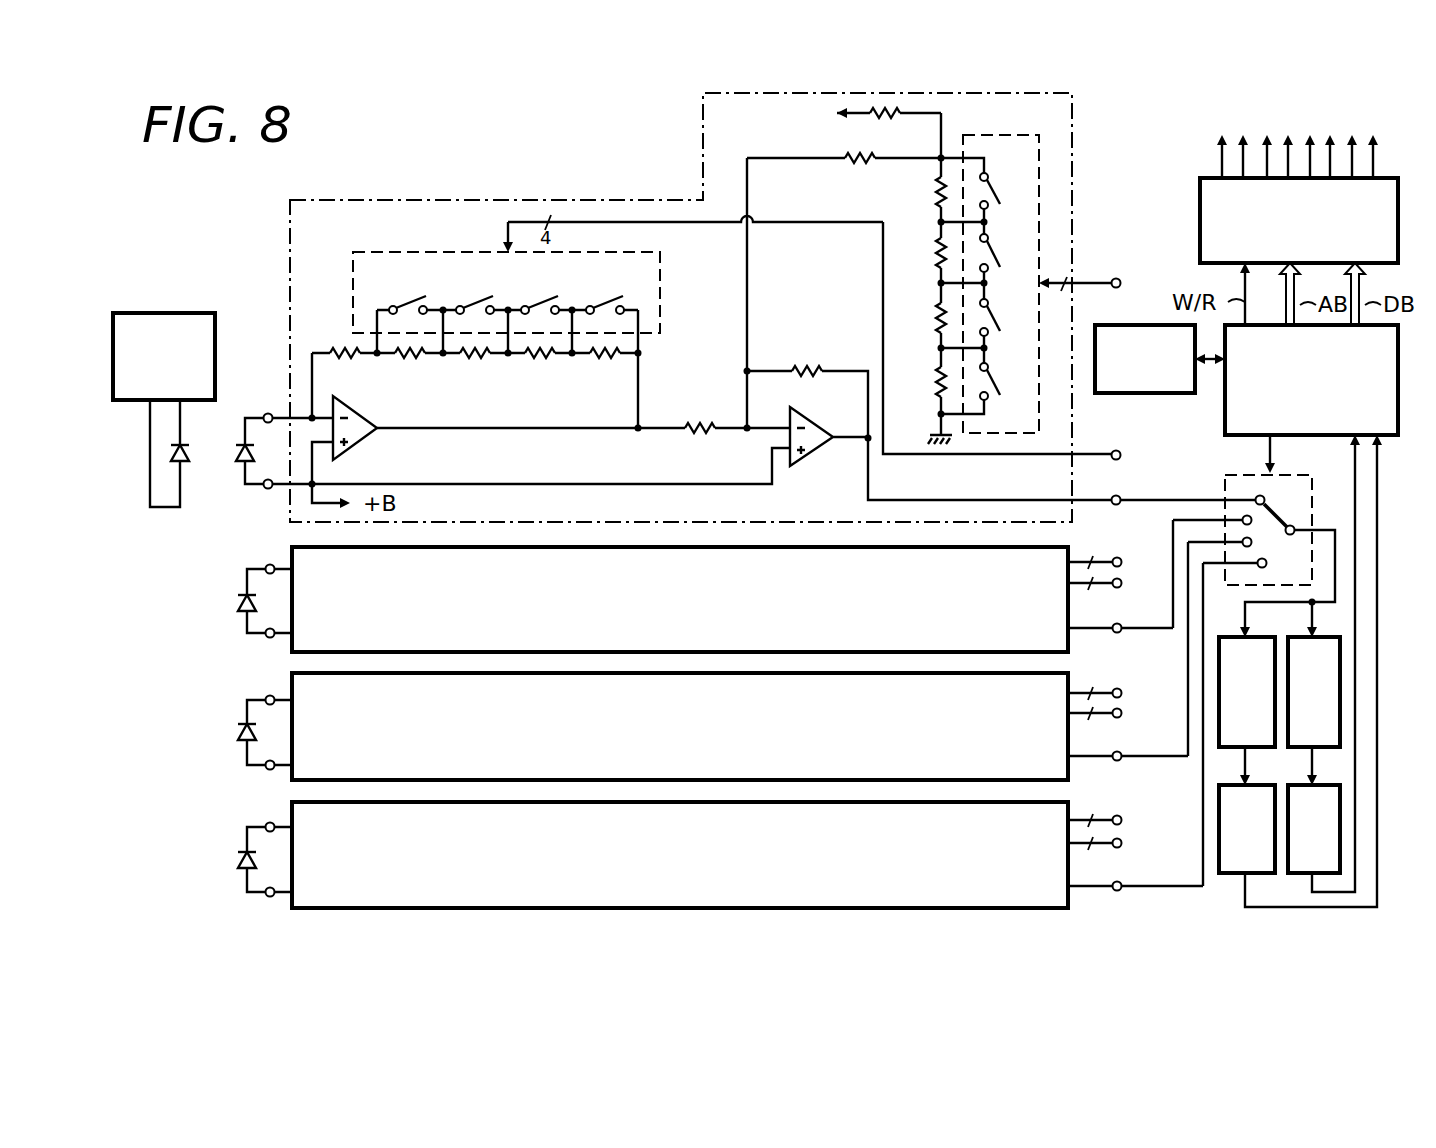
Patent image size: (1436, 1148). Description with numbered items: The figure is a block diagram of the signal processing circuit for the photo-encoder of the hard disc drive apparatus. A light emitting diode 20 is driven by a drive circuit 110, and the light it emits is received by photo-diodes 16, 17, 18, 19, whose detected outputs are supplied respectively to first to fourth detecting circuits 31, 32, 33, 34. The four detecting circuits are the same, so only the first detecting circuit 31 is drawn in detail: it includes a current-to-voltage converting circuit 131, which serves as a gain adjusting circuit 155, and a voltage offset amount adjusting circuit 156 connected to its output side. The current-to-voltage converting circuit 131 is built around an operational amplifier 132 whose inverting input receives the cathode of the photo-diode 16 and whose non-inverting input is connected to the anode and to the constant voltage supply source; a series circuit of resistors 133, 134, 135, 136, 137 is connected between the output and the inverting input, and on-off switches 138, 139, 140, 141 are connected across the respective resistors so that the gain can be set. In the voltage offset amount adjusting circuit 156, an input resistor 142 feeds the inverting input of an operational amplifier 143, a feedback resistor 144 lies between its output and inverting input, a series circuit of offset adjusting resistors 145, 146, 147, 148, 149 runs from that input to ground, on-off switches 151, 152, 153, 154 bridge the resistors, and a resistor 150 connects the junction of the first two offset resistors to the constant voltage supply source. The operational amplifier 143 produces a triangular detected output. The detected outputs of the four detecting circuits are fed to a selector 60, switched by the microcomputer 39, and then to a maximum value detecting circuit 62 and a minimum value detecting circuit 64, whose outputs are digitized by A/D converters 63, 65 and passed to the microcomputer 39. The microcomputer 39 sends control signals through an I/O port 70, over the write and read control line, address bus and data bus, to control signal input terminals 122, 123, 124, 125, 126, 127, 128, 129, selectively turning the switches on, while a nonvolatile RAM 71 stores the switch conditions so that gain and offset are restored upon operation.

The drive circuit 110 is at (175, 313).
The light emitting diode 20 is at (190, 460).
The photo-diode 16 is at (238, 442).
The photo-diode 17 is at (236, 607).
The photo-diode 18 is at (236, 738).
The photo-diode 19 is at (236, 868).
The first detecting circuit 31 is at (364, 188).
The second detecting circuit 32 is at (290, 558).
The third detecting circuit 33 is at (290, 687).
The fourth detecting circuit 34 is at (290, 815).
The current-to-voltage converting circuit 131 is at (486, 342).
The operational amplifier 132 is at (372, 444).
The resistor 133 is at (348, 360).
The resistor 134 is at (413, 360).
The resistor 135 is at (478, 360).
The resistor 136 is at (543, 360).
The resistor 137 is at (607, 360).
The on-off switch 138 is at (402, 303).
The on-off switch 139 is at (469, 303).
The on-off switch 140 is at (534, 303).
The on-off switch 141 is at (599, 303).
The input resistor 142 is at (700, 418).
The operational amplifier 143 is at (817, 426).
The feedback resistor 144 is at (803, 360).
The offset adjusting resistor 145 is at (860, 165).
The offset adjusting resistor 146 is at (926, 191).
The offset adjusting resistor 147 is at (932, 249).
The offset adjusting resistor 148 is at (930, 305).
The offset adjusting resistor 149 is at (925, 372).
The resistor 150 is at (878, 123).
The on-off switch 151 is at (998, 199).
The on-off switch 152 is at (998, 260).
The on-off switch 153 is at (998, 318).
The on-off switch 154 is at (998, 383).
The gain adjusting circuit 155 is at (489, 474).
The voltage offset amount adjusting circuit 156 is at (928, 300).
The control signal input terminal 122 is at (1116, 278).
The control signal input terminal 123 is at (1121, 456).
The control signal input terminal 124 is at (1121, 559).
The control signal input terminal 125 is at (1120, 586).
The control signal input terminal 126 is at (1121, 690).
The control signal input terminal 127 is at (1120, 716).
The control signal input terminal 128 is at (1121, 817).
The control signal input terminal 129 is at (1120, 846).
The I/O port 70 is at (1200, 204).
The RAM 71 is at (1158, 393).
The microcomputer 39 is at (1245, 436).
The selector 60 is at (1318, 488).
The maximum value detecting circuit 62 is at (1232, 636).
The A/D converter 63 is at (1243, 786).
The minimum value detecting circuit 64 is at (1302, 629).
The A/D converter 65 is at (1303, 786).